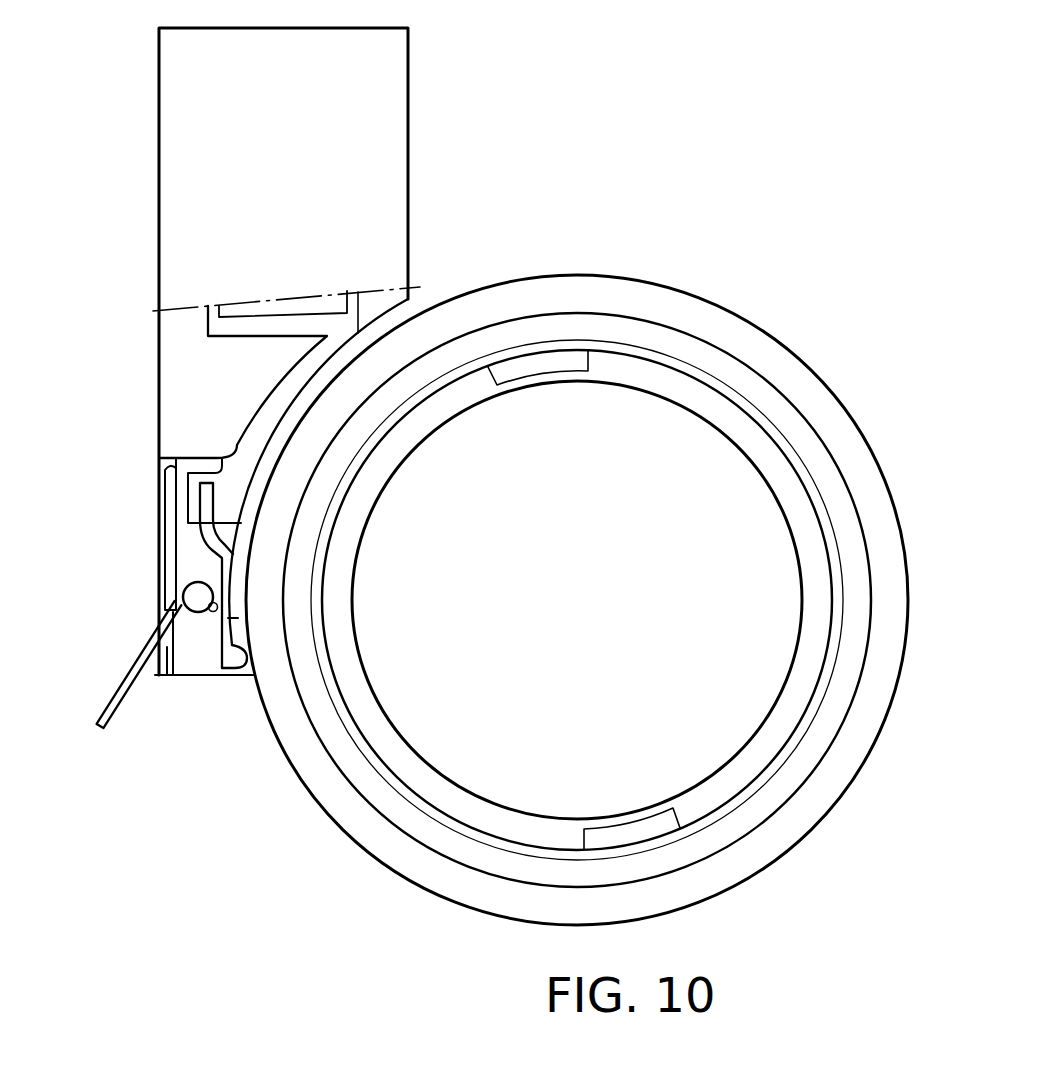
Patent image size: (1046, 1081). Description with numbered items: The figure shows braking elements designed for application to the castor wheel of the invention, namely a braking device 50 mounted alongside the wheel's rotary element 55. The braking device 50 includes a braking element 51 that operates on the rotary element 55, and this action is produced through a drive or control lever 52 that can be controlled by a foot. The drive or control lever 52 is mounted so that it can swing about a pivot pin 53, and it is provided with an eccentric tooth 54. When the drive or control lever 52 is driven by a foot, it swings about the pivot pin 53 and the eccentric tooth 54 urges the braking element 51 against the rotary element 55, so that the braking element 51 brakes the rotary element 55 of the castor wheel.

The braking device 50 is at (138, 545).
The braking element 51 is at (224, 602).
The drive or control lever 52 is at (128, 683).
The pivot pin 53 is at (196, 597).
The eccentric tooth 54 is at (218, 596).
The rotary element 55 is at (346, 810).